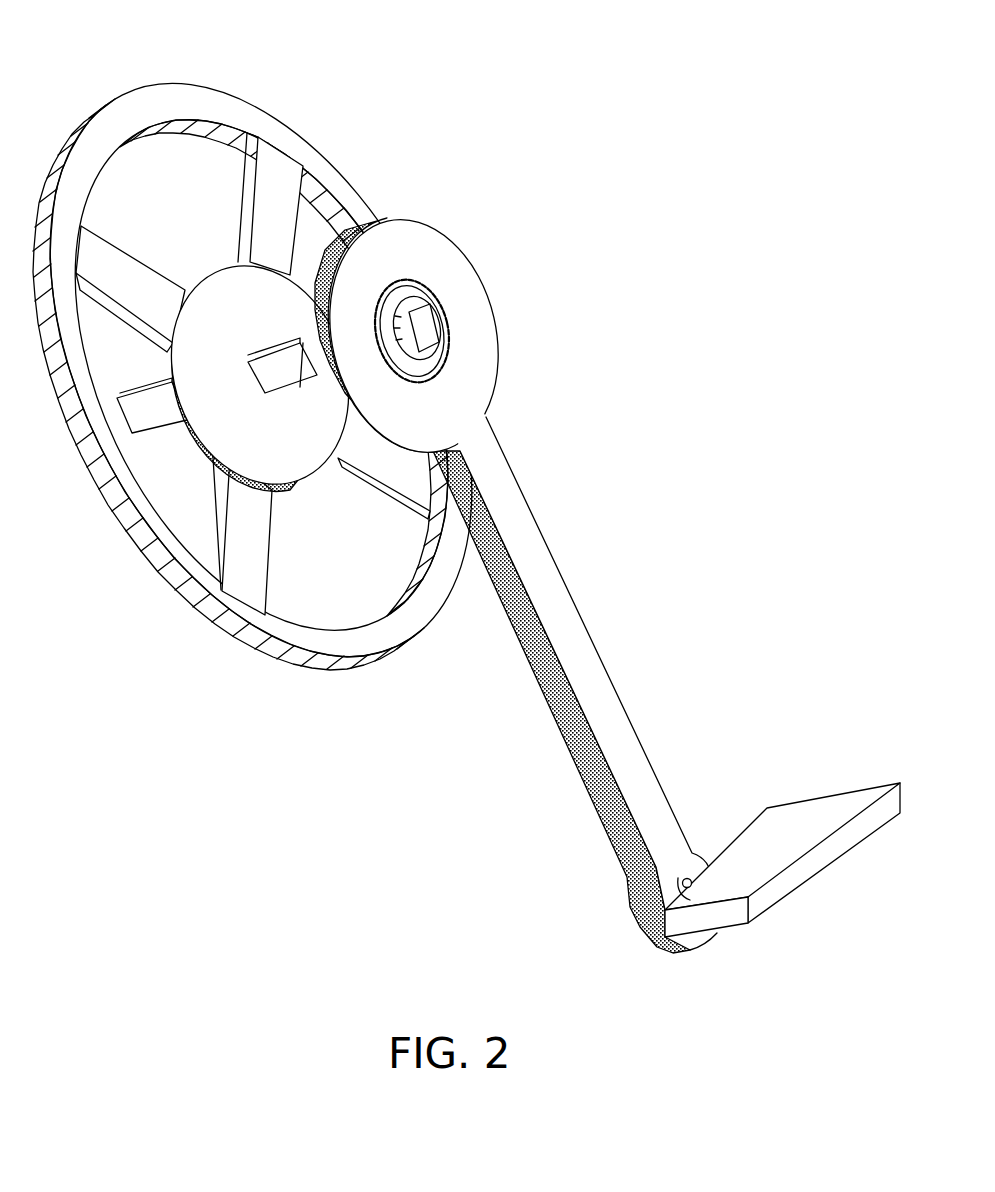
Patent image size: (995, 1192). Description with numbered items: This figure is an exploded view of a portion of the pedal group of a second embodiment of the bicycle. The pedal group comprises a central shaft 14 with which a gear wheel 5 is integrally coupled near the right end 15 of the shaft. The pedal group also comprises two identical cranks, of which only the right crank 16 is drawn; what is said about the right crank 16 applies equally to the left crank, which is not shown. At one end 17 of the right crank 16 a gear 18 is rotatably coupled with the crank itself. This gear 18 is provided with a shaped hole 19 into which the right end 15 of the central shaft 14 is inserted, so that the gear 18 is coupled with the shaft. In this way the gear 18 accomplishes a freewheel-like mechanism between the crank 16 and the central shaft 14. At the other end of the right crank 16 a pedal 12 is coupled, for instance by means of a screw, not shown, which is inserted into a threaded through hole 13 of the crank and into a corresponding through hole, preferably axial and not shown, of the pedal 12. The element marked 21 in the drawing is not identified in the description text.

The gear wheel 5 is at (167, 103).
The pedal 12 is at (797, 823).
The threaded through hole 13 is at (687, 883).
The central shaft 14 is at (143, 412).
The right end 15 is at (300, 362).
The right crank 16 is at (510, 573).
The end 17 is at (447, 253).
The gear 18 is at (418, 368).
The shaped hole 19 is at (428, 327).
The bracket 21 is at (647, 933).